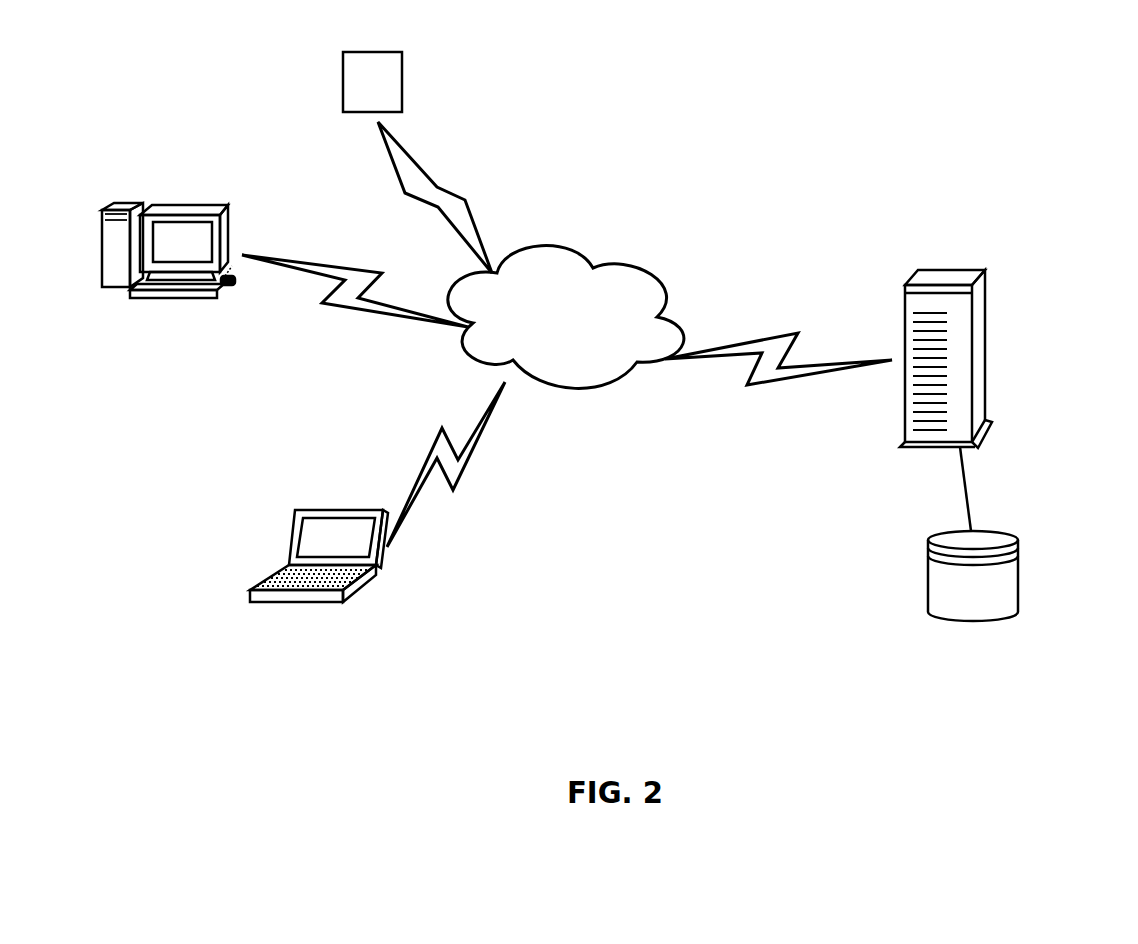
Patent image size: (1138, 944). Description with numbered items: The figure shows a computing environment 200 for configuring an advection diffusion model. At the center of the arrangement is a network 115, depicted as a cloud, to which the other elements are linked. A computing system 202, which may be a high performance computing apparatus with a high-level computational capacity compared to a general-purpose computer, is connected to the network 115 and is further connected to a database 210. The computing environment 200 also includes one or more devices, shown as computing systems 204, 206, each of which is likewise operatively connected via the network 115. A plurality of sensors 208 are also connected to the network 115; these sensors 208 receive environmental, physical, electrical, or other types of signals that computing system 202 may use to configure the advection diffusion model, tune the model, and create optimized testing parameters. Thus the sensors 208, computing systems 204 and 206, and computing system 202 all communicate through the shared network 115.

The computing environment 200 is at (964, 38).
The network 115 is at (600, 260).
The computing system 202 is at (996, 350).
The computing system 204 is at (390, 570).
The computing system 206 is at (117, 309).
The sensors 208 is at (412, 75).
The database 210 is at (1032, 580).